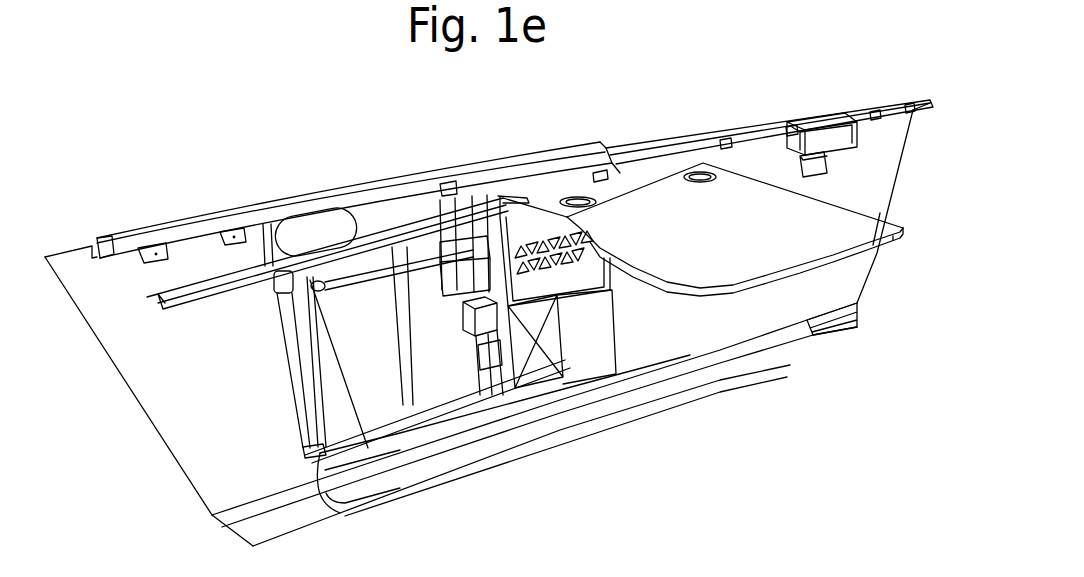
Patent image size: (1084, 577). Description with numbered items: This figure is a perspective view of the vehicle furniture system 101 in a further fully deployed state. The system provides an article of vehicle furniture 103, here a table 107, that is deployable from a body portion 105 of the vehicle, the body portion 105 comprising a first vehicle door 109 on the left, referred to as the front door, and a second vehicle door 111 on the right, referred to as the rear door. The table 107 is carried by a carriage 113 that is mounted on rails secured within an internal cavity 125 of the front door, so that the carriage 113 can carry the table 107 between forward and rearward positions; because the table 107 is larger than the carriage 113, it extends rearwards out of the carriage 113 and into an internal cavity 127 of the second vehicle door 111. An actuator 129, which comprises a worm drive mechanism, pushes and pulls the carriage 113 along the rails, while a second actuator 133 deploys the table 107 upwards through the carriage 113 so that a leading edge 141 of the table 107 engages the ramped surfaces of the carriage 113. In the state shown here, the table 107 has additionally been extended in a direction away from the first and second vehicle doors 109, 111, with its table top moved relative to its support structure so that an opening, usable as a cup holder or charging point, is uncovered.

The vehicle furniture system 101 is at (124, 141).
The article of vehicle furniture 103 is at (755, 170).
The body portion 105 is at (920, 152).
The table 107 is at (810, 247).
The first vehicle door 109 is at (440, 170).
The second vehicle door 111 is at (693, 133).
The carriage 113 is at (582, 352).
The internal cavity 125 is at (207, 421).
The internal cavity 127 is at (773, 307).
The actuator 129 is at (450, 280).
The actuator 133 is at (483, 325).
The leading edge 141 is at (891, 245).